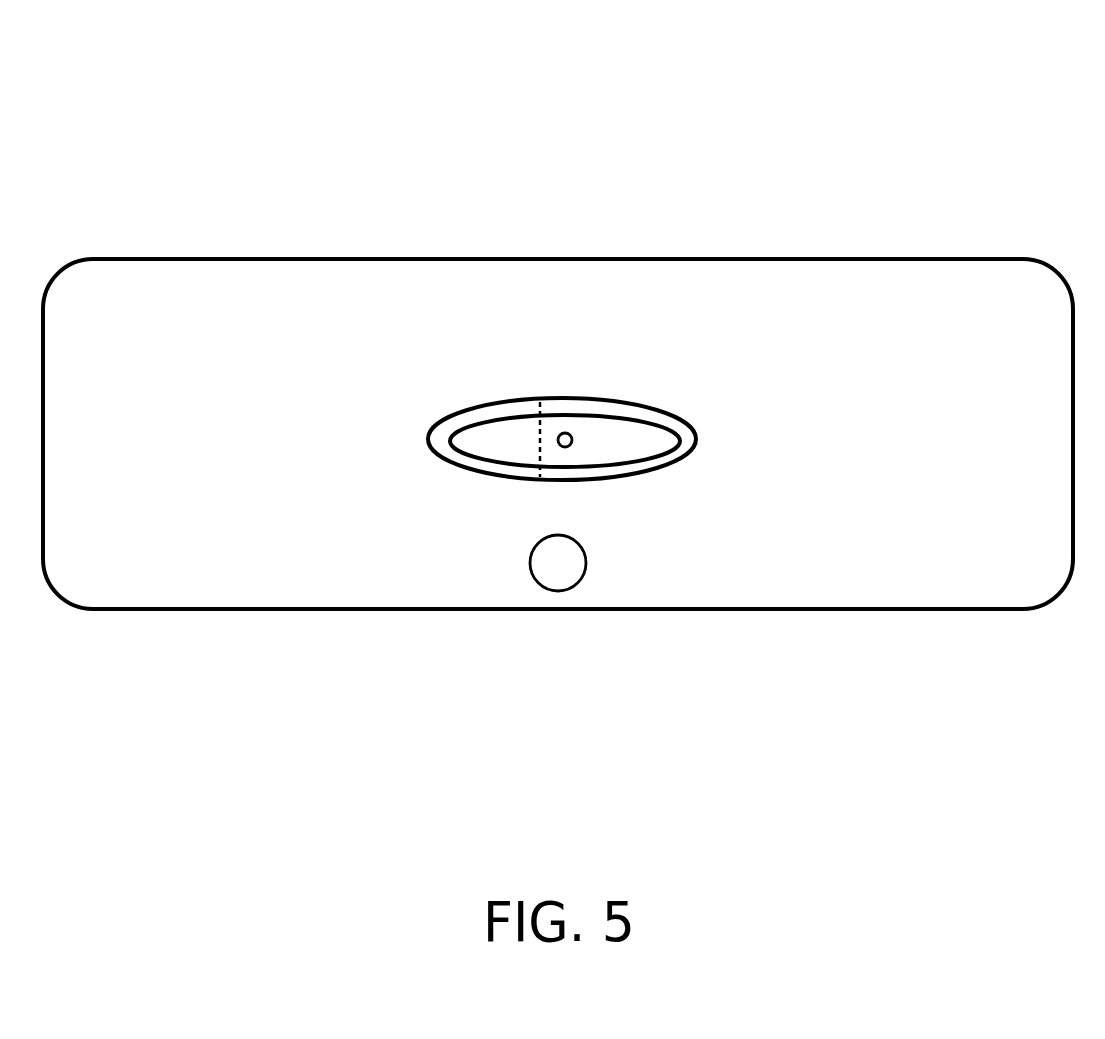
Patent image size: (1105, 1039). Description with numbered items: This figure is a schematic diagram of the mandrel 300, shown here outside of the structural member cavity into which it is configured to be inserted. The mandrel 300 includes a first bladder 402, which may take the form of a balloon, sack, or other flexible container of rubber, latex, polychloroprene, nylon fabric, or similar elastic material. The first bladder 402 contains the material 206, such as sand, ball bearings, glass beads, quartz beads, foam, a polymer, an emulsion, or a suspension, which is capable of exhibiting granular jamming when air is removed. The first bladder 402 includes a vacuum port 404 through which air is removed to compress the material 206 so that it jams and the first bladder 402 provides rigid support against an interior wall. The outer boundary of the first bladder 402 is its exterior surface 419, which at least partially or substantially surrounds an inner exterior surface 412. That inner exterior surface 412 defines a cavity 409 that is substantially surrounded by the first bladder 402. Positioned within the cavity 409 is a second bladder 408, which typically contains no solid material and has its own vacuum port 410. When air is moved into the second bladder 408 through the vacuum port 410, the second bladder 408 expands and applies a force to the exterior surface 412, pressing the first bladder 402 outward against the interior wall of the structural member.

The mandrel 300 is at (1003, 82).
The first bladder 402 is at (953, 259).
The material 206 is at (950, 431).
The exterior surface of the first bladder 419 is at (775, 611).
The exterior surface of the first bladder 412 is at (595, 398).
The second bladder 408 is at (660, 422).
The cavity 409 is at (538, 441).
The vacuum port 410 is at (565, 432).
The vacuum port 404 is at (577, 542).